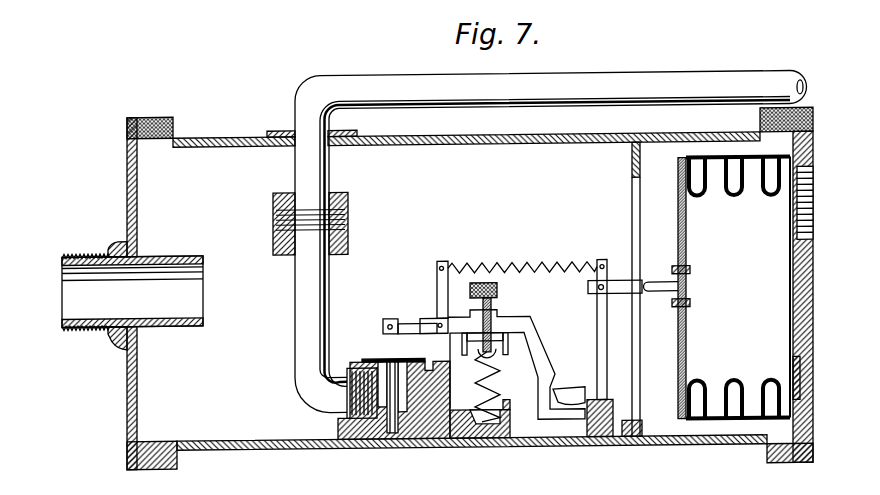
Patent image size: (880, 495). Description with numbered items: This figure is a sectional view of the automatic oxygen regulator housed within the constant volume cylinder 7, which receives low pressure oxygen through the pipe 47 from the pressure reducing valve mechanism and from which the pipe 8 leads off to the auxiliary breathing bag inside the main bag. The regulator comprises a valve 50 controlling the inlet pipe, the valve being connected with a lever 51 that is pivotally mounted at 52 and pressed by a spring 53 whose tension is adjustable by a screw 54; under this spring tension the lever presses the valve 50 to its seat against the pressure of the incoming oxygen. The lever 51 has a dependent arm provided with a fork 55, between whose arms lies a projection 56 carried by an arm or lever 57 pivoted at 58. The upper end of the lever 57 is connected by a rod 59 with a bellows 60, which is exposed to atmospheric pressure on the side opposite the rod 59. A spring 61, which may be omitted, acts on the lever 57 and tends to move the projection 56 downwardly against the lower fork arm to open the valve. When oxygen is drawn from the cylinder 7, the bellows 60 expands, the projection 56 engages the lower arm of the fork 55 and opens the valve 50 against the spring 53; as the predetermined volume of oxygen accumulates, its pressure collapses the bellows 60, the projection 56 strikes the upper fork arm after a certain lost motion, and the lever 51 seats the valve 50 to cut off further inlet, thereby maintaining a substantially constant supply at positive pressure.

The cylinder 7 is at (460, 146).
The pipe 8 is at (80, 252).
The pipe 47 is at (616, 77).
The valve 50 is at (377, 357).
The lever 51 is at (412, 324).
The pivot 52 is at (438, 321).
The spring 53 is at (492, 382).
The screw 54 is at (498, 291).
The fork 55 is at (552, 378).
The projection 56 is at (575, 398).
The arm or lever 57 is at (596, 318).
The pivot 58 is at (604, 412).
The rod 59 is at (609, 262).
The bellows 60 is at (762, 198).
The spring 61 is at (526, 263).